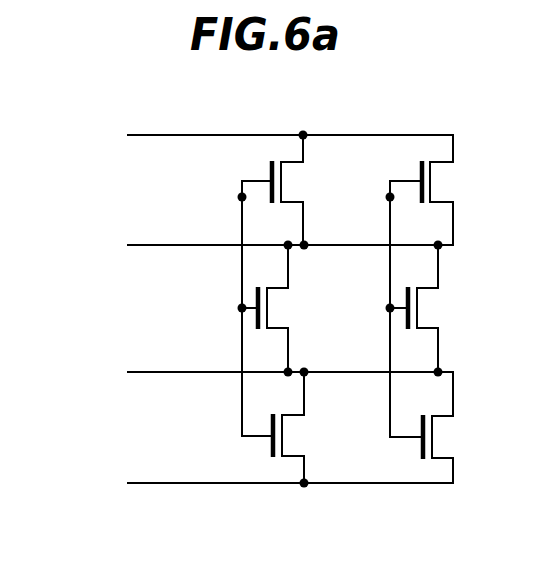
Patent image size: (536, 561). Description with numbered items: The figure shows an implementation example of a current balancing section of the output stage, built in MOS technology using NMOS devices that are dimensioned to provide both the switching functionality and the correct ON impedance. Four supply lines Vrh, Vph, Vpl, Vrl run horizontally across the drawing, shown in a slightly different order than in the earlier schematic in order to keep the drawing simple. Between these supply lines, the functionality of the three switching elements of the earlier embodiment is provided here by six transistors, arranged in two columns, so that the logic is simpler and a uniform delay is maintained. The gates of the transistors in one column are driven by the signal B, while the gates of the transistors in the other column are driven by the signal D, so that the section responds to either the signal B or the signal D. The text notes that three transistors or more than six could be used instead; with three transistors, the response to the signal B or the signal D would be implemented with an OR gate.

The supply line Vrh is at (270, 133).
The supply line Vph is at (267, 243).
The supply line Vpl is at (272, 371).
The supply line Vrl is at (275, 481).
The signal B is at (242, 197).
The signal D is at (390, 197).